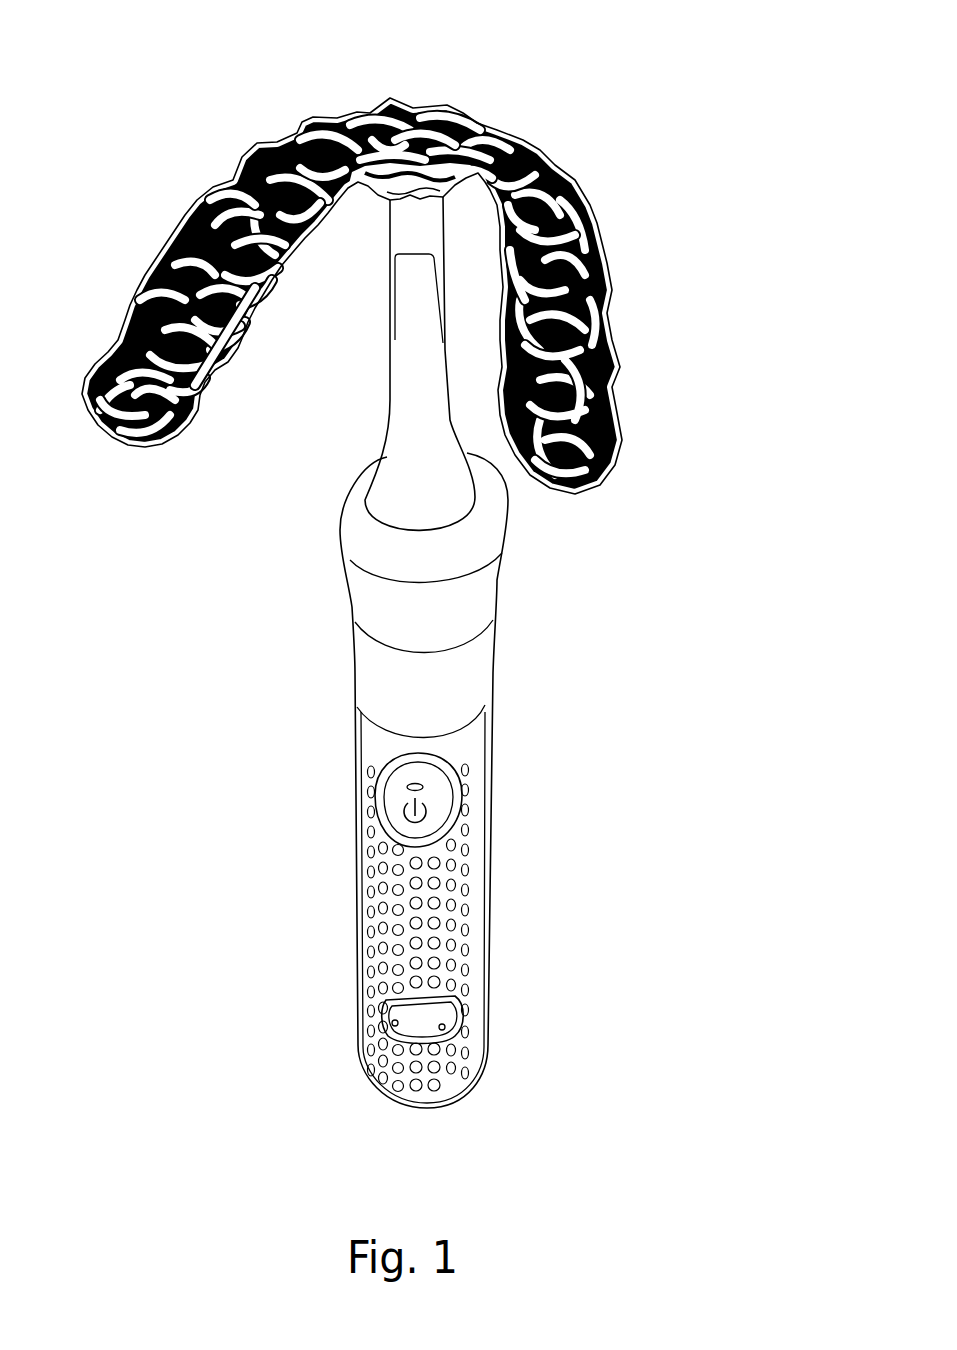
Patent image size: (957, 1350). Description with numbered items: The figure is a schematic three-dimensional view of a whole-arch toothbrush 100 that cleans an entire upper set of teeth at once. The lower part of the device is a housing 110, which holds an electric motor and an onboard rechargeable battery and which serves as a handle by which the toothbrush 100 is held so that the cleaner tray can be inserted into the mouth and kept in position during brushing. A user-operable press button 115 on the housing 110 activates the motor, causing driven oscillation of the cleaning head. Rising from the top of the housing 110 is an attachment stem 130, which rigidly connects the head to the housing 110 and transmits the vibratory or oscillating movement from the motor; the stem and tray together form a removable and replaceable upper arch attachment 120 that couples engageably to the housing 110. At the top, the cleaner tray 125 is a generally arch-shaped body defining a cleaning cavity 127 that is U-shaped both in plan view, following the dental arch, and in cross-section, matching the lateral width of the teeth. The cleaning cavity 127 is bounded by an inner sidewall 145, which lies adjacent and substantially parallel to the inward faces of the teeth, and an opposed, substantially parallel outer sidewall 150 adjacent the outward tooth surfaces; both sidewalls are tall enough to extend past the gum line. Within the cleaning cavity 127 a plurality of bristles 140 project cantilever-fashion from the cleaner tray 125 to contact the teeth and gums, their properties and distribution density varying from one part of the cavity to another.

The whole-arch toothbrush 100 is at (680, 118).
The housing 110 is at (477, 670).
The press button 115 is at (437, 802).
The upper arch attachment 120 is at (207, 457).
The cleaner tray 125 is at (620, 265).
The cleaning cavity 127 is at (143, 280).
The attachment stem 130 is at (402, 387).
The bristles 140 is at (485, 137).
The inner sidewall 145 is at (252, 290).
The outer sidewall 150 is at (213, 187).